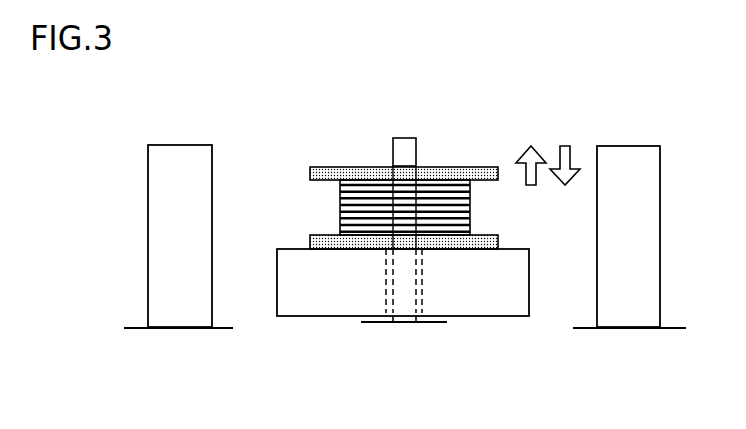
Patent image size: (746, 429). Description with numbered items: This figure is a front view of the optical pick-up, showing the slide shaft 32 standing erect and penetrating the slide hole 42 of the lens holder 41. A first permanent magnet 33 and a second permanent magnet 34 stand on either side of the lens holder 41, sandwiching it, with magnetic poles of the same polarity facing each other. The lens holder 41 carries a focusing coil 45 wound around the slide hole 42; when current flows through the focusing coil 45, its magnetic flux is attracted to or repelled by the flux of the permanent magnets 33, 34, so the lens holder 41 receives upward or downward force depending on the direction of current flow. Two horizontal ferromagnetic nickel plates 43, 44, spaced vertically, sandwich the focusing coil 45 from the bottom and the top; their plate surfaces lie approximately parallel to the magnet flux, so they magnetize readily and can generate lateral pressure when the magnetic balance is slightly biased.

The slide shaft 32 is at (405, 152).
The first permanent magnet 33 is at (180, 310).
The second permanent magnet 34 is at (630, 310).
The lens holder 41 is at (462, 331).
The slide hole 42 is at (388, 298).
The nickel plate 43 is at (310, 240).
The nickel plate 44 is at (330, 167).
The focusing coil 45 is at (469, 207).